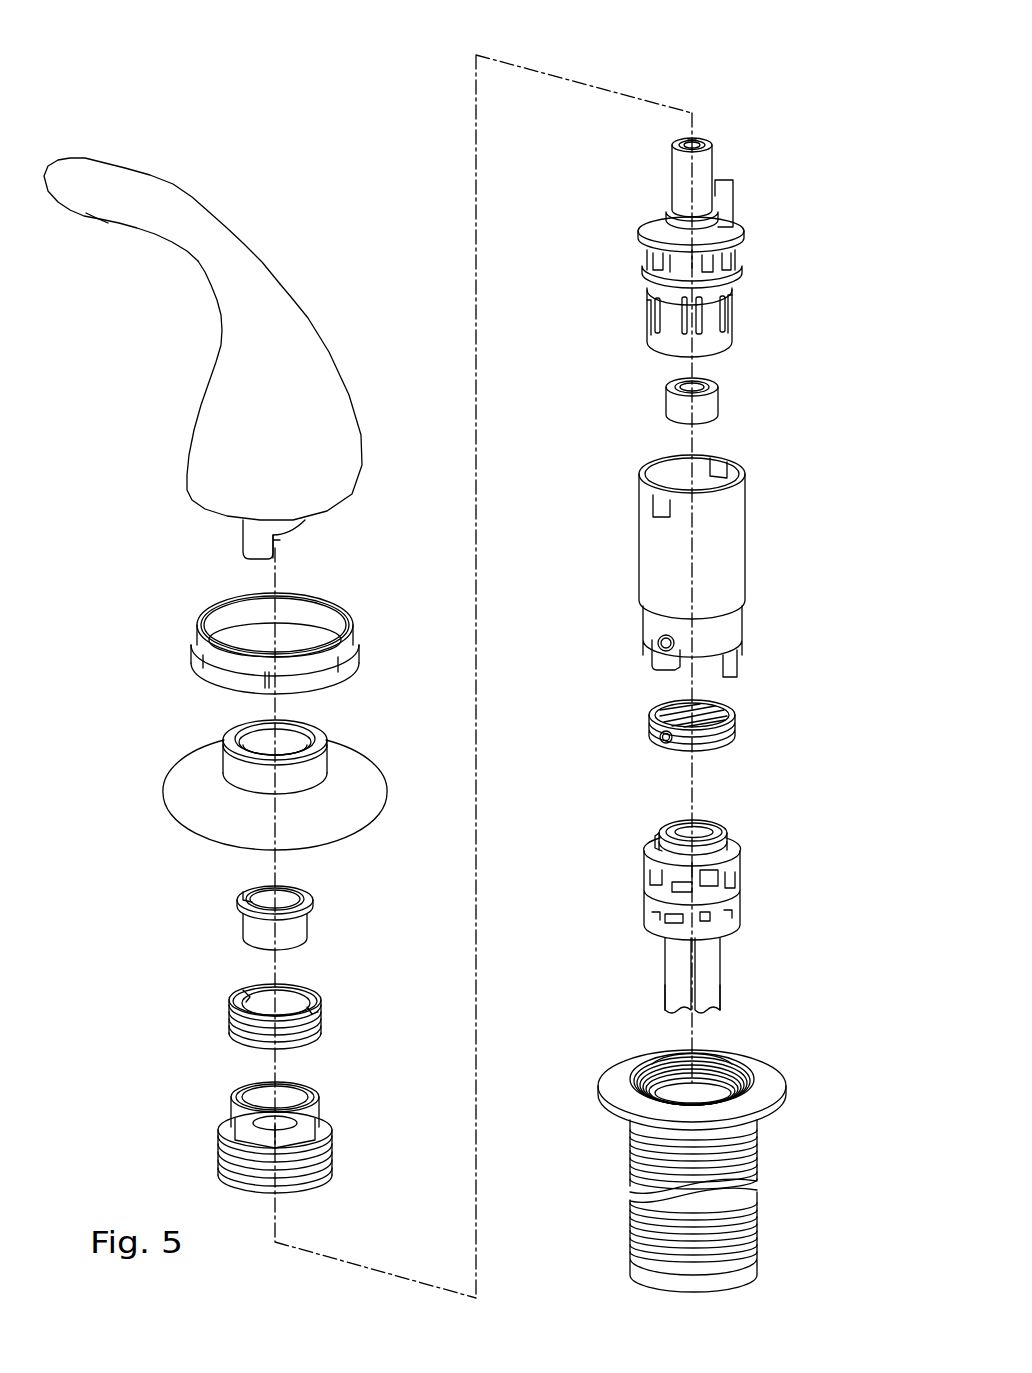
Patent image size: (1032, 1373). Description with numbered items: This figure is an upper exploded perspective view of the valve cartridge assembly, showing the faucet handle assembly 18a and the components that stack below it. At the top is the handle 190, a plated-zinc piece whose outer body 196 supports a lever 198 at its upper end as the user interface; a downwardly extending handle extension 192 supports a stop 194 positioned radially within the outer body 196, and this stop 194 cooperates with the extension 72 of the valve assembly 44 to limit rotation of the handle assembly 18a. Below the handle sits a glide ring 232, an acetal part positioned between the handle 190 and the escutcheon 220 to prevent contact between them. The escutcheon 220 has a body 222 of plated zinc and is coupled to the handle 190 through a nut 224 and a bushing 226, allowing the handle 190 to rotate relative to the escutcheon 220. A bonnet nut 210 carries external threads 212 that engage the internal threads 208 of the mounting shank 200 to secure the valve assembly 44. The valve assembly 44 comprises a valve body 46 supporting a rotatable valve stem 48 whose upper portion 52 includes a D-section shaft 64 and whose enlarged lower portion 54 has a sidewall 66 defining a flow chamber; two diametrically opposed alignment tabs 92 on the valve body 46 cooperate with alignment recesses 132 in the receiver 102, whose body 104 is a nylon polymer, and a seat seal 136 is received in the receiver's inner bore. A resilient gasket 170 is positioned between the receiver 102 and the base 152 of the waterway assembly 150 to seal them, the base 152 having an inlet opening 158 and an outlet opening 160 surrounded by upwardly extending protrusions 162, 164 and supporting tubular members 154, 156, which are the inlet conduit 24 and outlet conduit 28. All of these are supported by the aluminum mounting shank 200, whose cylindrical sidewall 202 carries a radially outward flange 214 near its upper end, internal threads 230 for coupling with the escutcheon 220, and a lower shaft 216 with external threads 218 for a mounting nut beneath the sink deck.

The faucet handle assembly 18a is at (228, 293).
The handle 190 is at (228, 351).
The lever 198 is at (193, 216).
The outer body 196 is at (210, 440).
The handle extension 192 is at (244, 534).
The stop 194 is at (276, 557).
The glide ring 232 is at (195, 658).
The escutcheon 220 is at (225, 770).
The escutcheon body 222 is at (358, 782).
The bushing 226 is at (246, 932).
The nut 224 is at (325, 1020).
The bonnet nut 210 is at (253, 1136).
The external threads 212 is at (335, 1152).
The valve assembly 44 is at (721, 208).
The valve stem 48 is at (717, 142).
The shaft 64 is at (672, 143).
The upper portion of valve stem 52 is at (678, 171).
The extension 72 is at (730, 182).
The alignment tabs 92 is at (650, 258).
The valve body 46 is at (730, 257).
The enlarged lower portion of valve stem 54 is at (735, 340).
The sidewall 66 is at (667, 330).
The seat seal 136 is at (668, 405).
The receiver 102 is at (720, 533).
The receiver body 104 is at (735, 572).
The alignment recesses 132 is at (722, 468).
The gasket 170 is at (740, 709).
The waterway assembly 150 is at (678, 895).
The inlet opening 158 is at (670, 823).
The outlet opening 160 is at (712, 822).
The protrusion 162 is at (668, 843).
The protrusion 164 is at (728, 840).
The base 152 is at (740, 900).
The tubular member 154 is at (672, 960).
The tubular member 156 is at (712, 960).
The inlet conduit 24 is at (672, 988).
The outlet conduit 28 is at (712, 988).
The mounting shank 200 is at (722, 1170).
The flange 214 is at (773, 1110).
The internal threads 208 is at (718, 1072).
The internal threads 230 is at (652, 1063).
The cylindrical sidewall 202 is at (752, 1242).
The external threads 218 is at (635, 1162).
The lower shaft 216 is at (645, 1227).